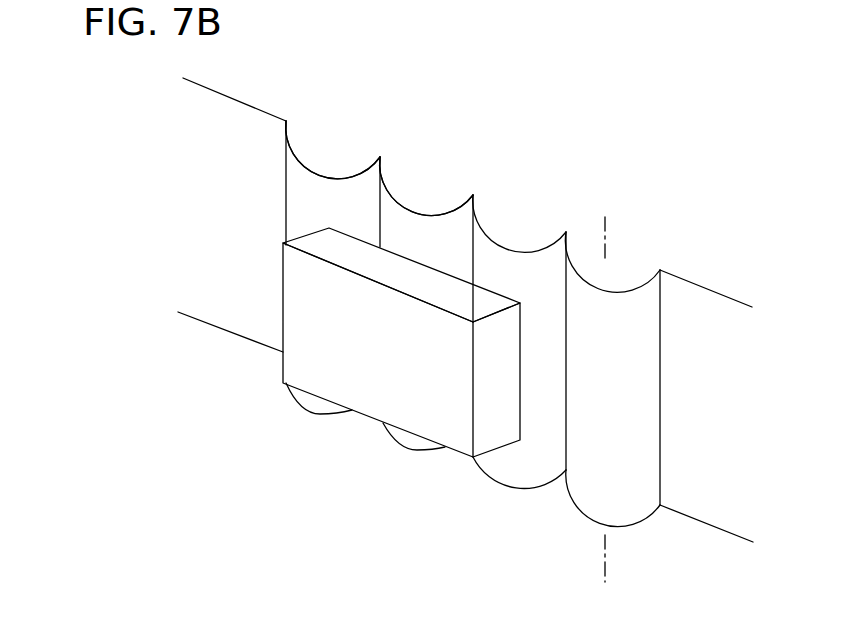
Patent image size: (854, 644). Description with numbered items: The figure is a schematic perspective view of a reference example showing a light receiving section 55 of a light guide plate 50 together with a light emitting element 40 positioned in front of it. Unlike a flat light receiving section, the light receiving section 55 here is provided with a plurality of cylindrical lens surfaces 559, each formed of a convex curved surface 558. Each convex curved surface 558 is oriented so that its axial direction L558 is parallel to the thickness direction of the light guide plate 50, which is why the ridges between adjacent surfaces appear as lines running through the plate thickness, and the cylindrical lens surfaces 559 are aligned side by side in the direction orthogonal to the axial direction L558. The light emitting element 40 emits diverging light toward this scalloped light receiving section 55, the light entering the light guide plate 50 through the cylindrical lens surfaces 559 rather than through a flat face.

The light guide plate 50 is at (712, 482).
The light receiving section 55 is at (659, 233).
The convex curved surface 558 is at (305, 170).
The cylindrical lens surface 559 is at (418, 215).
The light emitting element 40 is at (493, 432).
The axial direction L558 is at (607, 573).